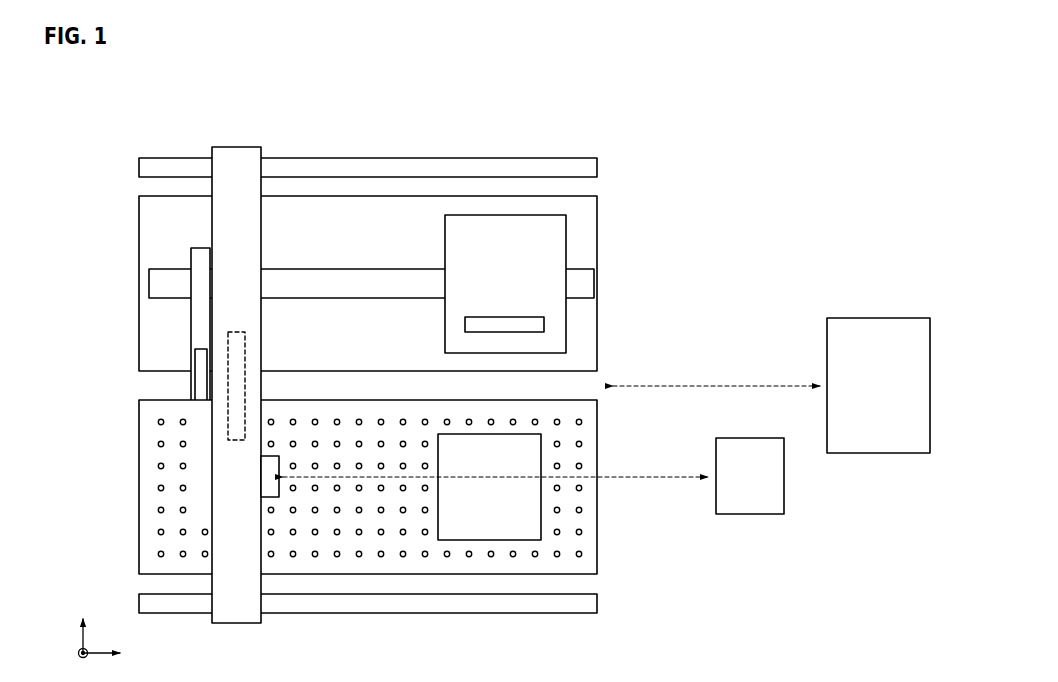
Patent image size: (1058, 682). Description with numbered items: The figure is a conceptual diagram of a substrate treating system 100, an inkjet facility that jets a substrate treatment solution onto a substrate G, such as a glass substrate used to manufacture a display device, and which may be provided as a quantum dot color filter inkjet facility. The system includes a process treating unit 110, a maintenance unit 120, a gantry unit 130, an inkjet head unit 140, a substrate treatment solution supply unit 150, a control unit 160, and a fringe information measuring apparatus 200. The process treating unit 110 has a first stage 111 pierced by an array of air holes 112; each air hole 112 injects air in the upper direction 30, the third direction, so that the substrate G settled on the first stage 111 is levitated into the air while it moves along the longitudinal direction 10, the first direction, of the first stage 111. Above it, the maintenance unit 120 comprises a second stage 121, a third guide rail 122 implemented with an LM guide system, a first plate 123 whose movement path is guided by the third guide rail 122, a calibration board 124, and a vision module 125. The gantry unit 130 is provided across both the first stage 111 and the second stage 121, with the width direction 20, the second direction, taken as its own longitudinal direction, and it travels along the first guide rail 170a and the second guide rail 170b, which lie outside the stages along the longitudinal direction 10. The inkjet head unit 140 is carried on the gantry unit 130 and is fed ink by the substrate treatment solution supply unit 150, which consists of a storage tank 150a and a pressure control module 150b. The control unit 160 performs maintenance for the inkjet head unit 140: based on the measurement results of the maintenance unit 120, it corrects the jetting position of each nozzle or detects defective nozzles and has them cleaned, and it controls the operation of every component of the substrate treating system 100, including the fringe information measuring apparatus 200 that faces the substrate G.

The substrate treating system 100 is at (739, 133).
The process treating unit 110 is at (364, 485).
The first stage 111 is at (147, 472).
The air hole 112 is at (159, 510).
The maintenance unit 120 is at (352, 349).
The second stage 121 is at (147, 333).
The third guide rail 122 is at (157, 284).
The first plate 123 is at (548, 284).
The calibration board 124 is at (540, 323).
The vision module 125 is at (237, 332).
The gantry unit 130 is at (194, 403).
The inkjet head unit 140 is at (275, 497).
The substrate treatment solution supply unit 150 is at (130, 380).
The storage tank 150a is at (200, 340).
The pressure control module 150b is at (201, 382).
The control unit 160 is at (876, 317).
The first guide rail 170a is at (542, 167).
The second guide rail 170b is at (540, 603).
The fringe information measuring apparatus 200 is at (751, 437).
The substrate G is at (525, 516).
The longitudinal direction 10 is at (112, 655).
The width direction 20 is at (82, 624).
The upper direction 30 is at (82, 663).